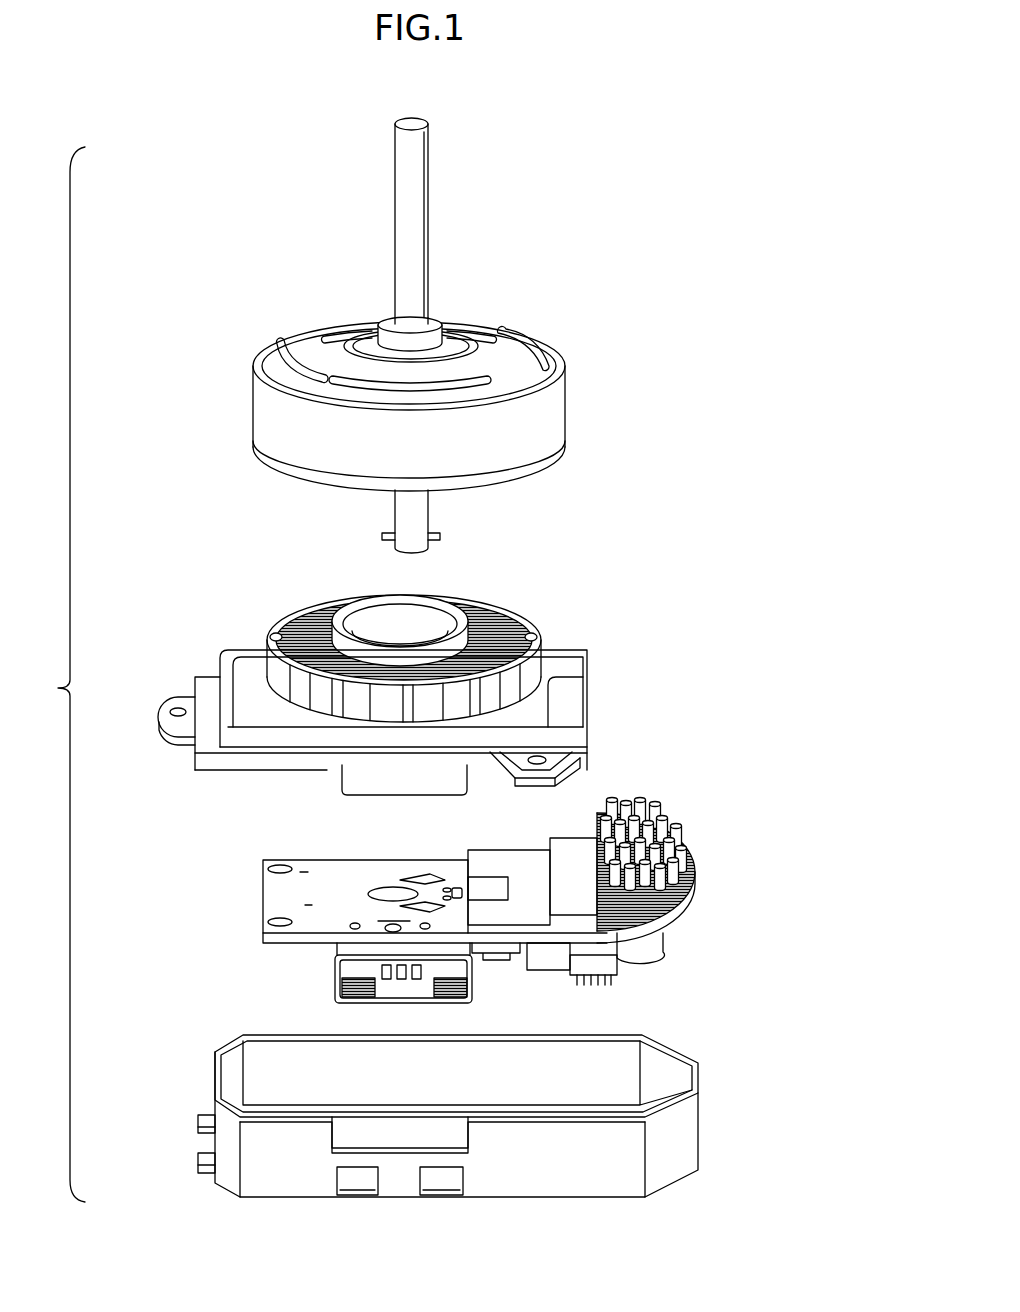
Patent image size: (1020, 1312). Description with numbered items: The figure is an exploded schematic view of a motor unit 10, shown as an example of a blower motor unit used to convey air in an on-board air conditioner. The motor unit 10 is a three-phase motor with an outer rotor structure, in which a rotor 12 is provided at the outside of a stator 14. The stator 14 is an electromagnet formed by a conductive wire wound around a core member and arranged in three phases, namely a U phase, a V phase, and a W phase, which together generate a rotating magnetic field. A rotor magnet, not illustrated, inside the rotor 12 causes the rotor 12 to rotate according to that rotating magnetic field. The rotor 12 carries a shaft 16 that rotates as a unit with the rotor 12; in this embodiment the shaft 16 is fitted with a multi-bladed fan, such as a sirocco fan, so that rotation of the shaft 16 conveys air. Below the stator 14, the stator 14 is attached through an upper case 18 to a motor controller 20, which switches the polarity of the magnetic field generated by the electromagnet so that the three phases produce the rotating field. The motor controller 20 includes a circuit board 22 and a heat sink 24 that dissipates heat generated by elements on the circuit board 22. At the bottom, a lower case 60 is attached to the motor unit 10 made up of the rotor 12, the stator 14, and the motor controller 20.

The motor unit 10 is at (722, 193).
The rotor 12 is at (566, 402).
The stator 14 is at (513, 623).
The shaft 16 is at (428, 197).
The upper case 18 is at (586, 697).
The motor controller 20 is at (758, 760).
The circuit board 22 is at (264, 900).
The heat sink 24 is at (697, 853).
The lower case 60 is at (700, 1122).